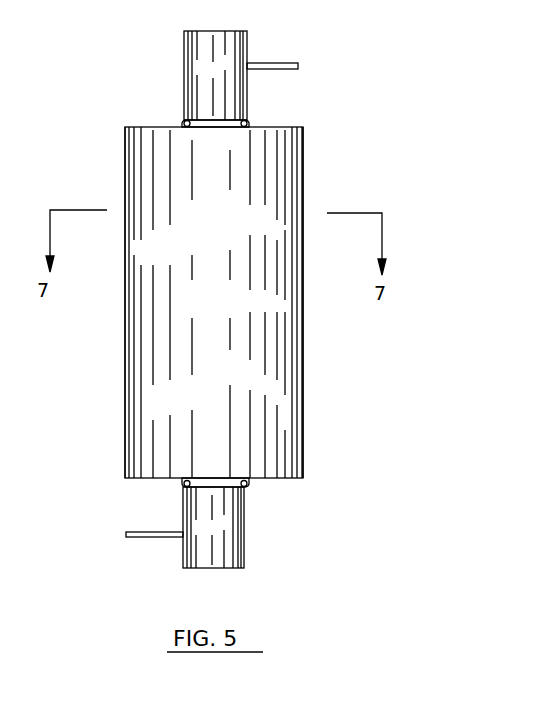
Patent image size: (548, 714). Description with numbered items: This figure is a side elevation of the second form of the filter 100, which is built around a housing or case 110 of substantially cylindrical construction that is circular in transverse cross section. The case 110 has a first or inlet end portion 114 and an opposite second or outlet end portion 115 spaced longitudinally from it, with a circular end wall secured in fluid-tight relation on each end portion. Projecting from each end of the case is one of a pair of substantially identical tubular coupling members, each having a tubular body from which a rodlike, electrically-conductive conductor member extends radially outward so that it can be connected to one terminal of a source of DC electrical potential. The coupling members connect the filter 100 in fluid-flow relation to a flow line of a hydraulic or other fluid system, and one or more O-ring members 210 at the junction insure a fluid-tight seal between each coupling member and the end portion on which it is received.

The filter 100 is at (224, 305).
The housing or case 110 is at (272, 217).
The first or inlet end portion 114 is at (285, 466).
The second or outlet end portion 115 is at (133, 133).
The O-ring member 210 is at (246, 121).